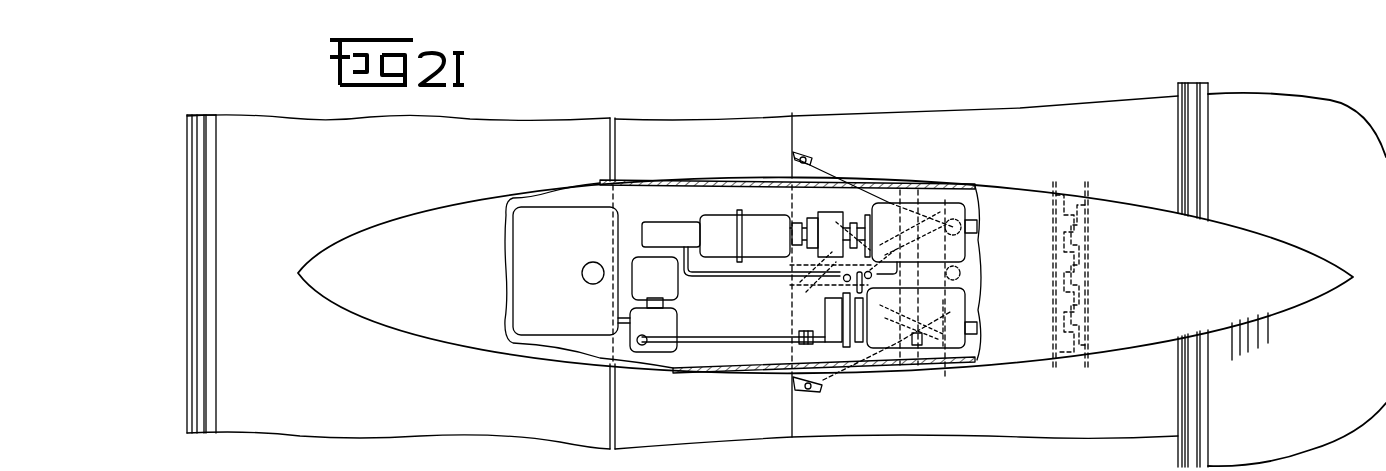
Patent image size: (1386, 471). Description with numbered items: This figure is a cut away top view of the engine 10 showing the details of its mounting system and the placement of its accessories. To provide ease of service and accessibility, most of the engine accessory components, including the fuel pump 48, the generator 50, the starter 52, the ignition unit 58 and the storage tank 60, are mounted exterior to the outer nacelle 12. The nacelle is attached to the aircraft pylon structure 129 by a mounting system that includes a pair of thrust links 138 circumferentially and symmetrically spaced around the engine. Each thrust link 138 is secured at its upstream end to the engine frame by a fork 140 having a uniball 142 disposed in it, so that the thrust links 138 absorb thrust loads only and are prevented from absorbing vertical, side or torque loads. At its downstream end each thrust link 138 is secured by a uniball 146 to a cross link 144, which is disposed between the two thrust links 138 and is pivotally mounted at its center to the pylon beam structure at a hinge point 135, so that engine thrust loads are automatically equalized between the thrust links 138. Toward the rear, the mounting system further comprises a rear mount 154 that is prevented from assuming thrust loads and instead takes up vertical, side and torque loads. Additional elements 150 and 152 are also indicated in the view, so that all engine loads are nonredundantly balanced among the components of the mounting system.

The underwater vehicle 10 is at (584, 92).
The outer nacelle 12 is at (548, 440).
The fuel pump 48 is at (660, 329).
The generator 50 is at (774, 243).
The starter 52 is at (937, 344).
The ignition unit 58 is at (665, 288).
The storage tank 60 is at (564, 287).
The aircraft pylon structure 129 is at (1007, 357).
The hinge point 135 is at (961, 274).
The thrust link 138 is at (830, 171).
The fork 140 is at (795, 155).
The uniball 142 is at (813, 162).
The cross link 144 is at (977, 254).
The uniball 146 is at (983, 328).
The tank 150 is at (978, 228).
The conduit 152 is at (943, 347).
The rear mount 154 is at (1095, 205).